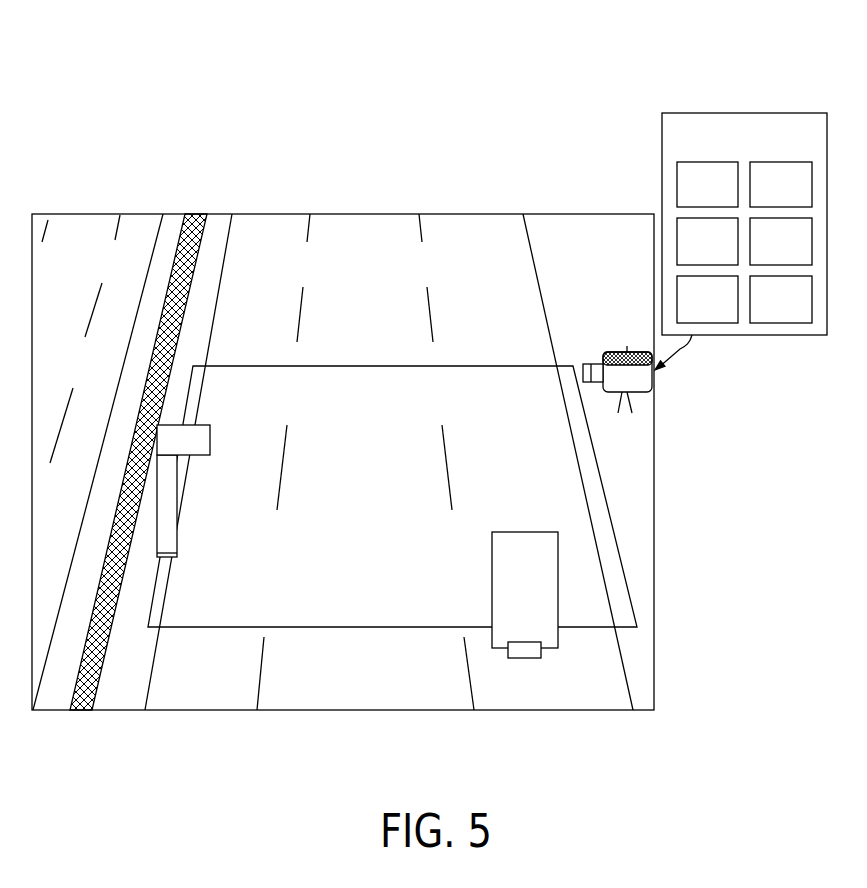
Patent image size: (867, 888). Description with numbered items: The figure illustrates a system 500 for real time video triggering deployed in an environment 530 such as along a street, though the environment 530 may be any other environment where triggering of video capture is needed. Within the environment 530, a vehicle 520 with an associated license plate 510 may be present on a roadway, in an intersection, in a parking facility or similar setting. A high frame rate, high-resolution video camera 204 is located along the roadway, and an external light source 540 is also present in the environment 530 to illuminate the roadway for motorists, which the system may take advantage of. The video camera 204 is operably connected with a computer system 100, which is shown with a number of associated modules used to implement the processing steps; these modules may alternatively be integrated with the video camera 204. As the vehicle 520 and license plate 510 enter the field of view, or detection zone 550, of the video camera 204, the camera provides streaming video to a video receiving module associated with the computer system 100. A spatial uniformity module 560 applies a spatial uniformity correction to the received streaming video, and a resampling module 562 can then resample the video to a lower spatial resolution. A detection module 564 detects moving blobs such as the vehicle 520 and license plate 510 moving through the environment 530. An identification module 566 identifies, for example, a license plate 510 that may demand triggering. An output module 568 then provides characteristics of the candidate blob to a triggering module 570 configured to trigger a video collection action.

The system 500 is at (381, 398).
The computer system 100 is at (741, 211).
The spatial uniformity module 560 is at (707, 184).
The resampling module 562 is at (707, 241).
The detection module 564 is at (707, 299).
The identification module 566 is at (781, 184).
The output module 568 is at (781, 241).
The triggering module 570 is at (781, 299).
The video camera 204 is at (657, 395).
The external light source 540 is at (193, 457).
The vehicle 520 is at (492, 590).
The license plate 510 is at (541, 652).
The detection zone 550 is at (368, 627).
The environment 530 is at (203, 710).